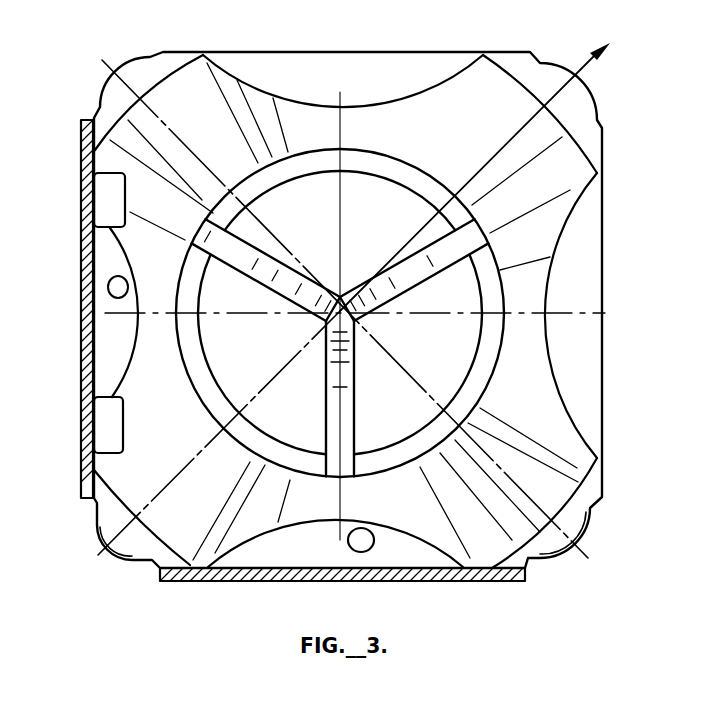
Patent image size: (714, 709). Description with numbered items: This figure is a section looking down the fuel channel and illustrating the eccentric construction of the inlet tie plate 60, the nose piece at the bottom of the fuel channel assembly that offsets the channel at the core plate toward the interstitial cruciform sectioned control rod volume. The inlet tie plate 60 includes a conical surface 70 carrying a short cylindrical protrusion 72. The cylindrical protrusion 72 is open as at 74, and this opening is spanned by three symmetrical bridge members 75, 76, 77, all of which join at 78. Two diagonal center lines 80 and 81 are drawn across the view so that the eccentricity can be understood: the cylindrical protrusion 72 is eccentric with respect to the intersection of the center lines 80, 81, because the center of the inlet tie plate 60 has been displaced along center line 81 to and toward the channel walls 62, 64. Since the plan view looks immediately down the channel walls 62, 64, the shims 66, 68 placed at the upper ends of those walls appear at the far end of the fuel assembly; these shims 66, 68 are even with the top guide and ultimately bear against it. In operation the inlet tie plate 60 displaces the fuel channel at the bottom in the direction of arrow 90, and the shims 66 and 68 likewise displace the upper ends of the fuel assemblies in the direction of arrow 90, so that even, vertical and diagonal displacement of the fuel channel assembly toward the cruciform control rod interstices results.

The inlet tie plate 60 is at (576, 182).
The channel wall 62 is at (100, 252).
The channel wall 64 is at (378, 571).
The shim 66 is at (85, 341).
The shim 68 is at (430, 583).
The conical surface 70 is at (503, 131).
The cylindrical protrusion 72 is at (494, 360).
The opening 74 is at (450, 369).
The bridge member 75 is at (433, 277).
The bridge member 76 is at (247, 277).
The bridge member 77 is at (355, 427).
The junction of bridge members 78 is at (344, 297).
The diagonal center line 80 is at (163, 121).
The diagonal center line 81 is at (181, 473).
The arrow 90 is at (588, 66).